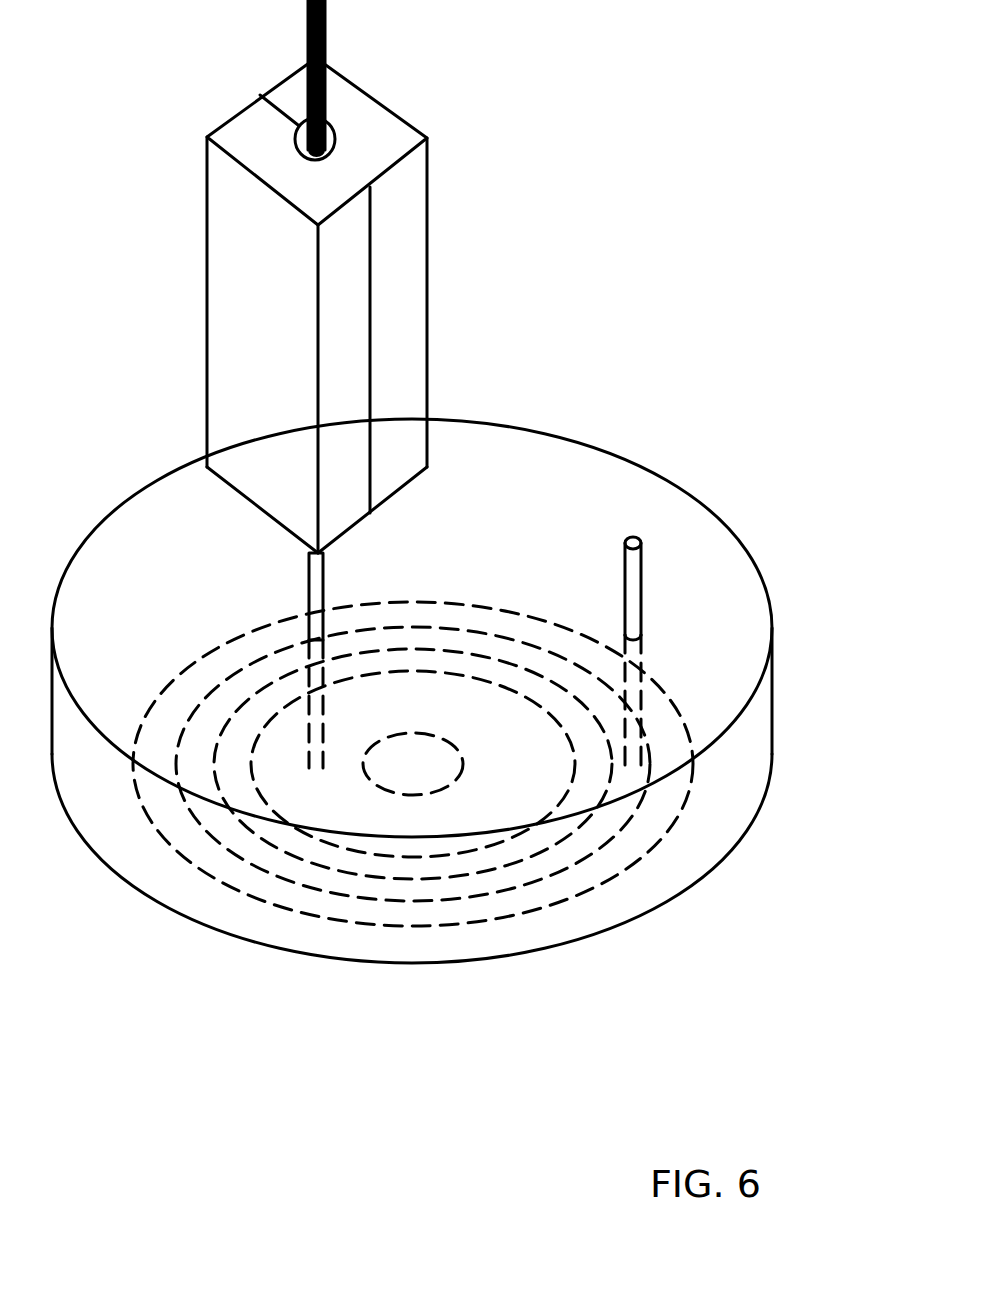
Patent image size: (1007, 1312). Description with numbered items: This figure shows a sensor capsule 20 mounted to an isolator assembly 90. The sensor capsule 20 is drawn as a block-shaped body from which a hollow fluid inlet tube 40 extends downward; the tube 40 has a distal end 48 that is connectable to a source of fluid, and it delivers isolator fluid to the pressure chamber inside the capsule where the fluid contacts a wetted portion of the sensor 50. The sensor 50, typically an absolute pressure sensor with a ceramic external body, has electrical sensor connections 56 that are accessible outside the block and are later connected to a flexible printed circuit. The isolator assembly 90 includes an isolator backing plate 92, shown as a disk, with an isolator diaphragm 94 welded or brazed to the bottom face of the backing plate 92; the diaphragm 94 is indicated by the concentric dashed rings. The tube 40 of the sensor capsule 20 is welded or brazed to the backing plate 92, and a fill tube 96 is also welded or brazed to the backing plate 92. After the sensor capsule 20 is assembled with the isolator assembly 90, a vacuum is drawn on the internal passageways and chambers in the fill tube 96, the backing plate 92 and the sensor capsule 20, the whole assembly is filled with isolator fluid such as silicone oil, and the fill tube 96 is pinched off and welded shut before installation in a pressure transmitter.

The sensor capsule 20 is at (250, 384).
The fluid inlet tube 40 is at (323, 580).
The distal end 48 is at (317, 638).
The sensor 50 is at (323, 88).
The electrical sensor connections 56 is at (308, 13).
The isolator assembly 90 is at (474, 703).
The isolator backing plate 92 is at (773, 702).
The isolator diaphragm 94 is at (430, 928).
The fill tube 96 is at (628, 588).